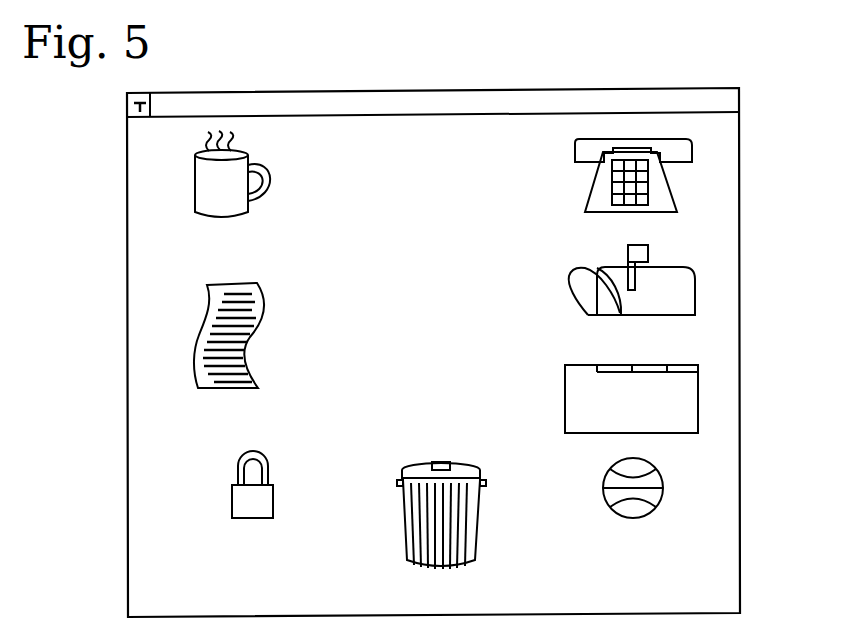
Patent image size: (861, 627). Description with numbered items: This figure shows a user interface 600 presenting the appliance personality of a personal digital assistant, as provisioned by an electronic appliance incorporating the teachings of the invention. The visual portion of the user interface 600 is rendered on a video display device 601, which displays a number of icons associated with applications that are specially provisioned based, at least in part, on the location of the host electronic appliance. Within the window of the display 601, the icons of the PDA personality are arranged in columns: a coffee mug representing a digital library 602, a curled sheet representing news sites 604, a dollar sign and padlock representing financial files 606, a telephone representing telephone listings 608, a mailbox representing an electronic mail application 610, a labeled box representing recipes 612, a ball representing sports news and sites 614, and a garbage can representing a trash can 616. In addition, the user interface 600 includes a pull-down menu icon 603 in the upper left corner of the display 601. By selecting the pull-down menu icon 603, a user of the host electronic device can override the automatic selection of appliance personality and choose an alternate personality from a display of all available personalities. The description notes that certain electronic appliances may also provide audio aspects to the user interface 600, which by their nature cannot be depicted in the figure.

The user interface 600 is at (642, 66).
The video display device 601 is at (723, 175).
The digital library icon 602 is at (273, 166).
The pull-down menu icon 603 is at (133, 119).
The news sites icon 604 is at (268, 308).
The financial files icon 606 is at (272, 468).
The telephone listings icon 608 is at (572, 156).
The electronic mail application icon 610 is at (572, 282).
The recipes icon 612 is at (563, 378).
The sports news/sites icon 614 is at (603, 484).
The trash can icon 616 is at (403, 532).